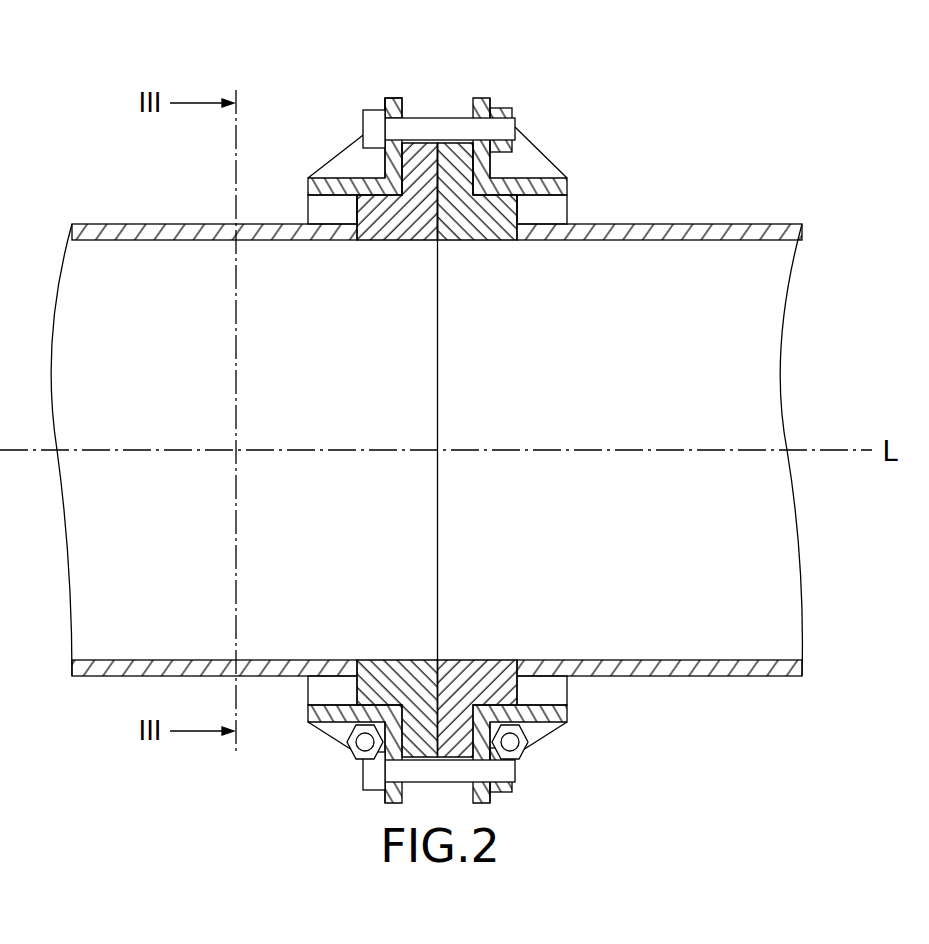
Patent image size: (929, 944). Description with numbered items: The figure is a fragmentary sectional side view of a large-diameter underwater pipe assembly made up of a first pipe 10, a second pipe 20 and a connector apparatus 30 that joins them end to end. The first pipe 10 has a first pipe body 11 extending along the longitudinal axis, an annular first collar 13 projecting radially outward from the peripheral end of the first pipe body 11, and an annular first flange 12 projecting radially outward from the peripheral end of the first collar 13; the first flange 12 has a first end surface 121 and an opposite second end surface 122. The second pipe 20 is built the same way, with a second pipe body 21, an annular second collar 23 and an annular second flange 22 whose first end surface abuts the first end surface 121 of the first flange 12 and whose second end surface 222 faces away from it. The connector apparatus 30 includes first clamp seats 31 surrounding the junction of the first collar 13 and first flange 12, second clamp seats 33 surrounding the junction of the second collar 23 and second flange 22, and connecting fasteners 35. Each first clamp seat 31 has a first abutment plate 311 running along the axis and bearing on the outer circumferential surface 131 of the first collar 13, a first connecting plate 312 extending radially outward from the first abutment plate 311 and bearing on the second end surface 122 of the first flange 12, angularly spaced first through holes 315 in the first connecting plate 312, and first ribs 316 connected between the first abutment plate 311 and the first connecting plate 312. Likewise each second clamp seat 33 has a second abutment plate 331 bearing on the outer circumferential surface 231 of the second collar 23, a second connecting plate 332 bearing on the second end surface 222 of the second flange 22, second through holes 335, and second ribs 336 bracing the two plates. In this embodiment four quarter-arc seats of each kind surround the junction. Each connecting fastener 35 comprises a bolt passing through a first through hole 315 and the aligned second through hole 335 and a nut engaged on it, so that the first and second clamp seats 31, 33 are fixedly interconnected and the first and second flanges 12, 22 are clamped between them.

The first pipe 10 is at (239, 417).
The first pipe body 11 is at (183, 252).
The first flange 12 is at (352, 168).
The first collar 13 is at (352, 212).
The outer circumferential surface 131 is at (378, 197).
The second end surface 122 is at (407, 190).
The first end surface 121 is at (423, 200).
The second end surface 222 is at (457, 190).
The outer circumferential surface 231 is at (503, 203).
The second collar 23 is at (520, 212).
The second flange 22 is at (538, 168).
The second pipe body 21 is at (700, 240).
The second pipe 20 is at (647, 430).
The connector apparatus 30 is at (462, 417).
The first clamp seat 31 is at (360, 417).
The first abutment plate 311 is at (312, 178).
The first connecting plate 312 is at (393, 98).
The first through hole 315 is at (380, 117).
The first rib 316 is at (325, 157).
The second clamp seat 33 is at (575, 421).
The second abutment plate 331 is at (572, 187).
The second connecting plate 332 is at (485, 100).
The second through hole 335 is at (490, 105).
The second rib 336 is at (552, 160).
The connecting fastener 35 is at (447, 118).